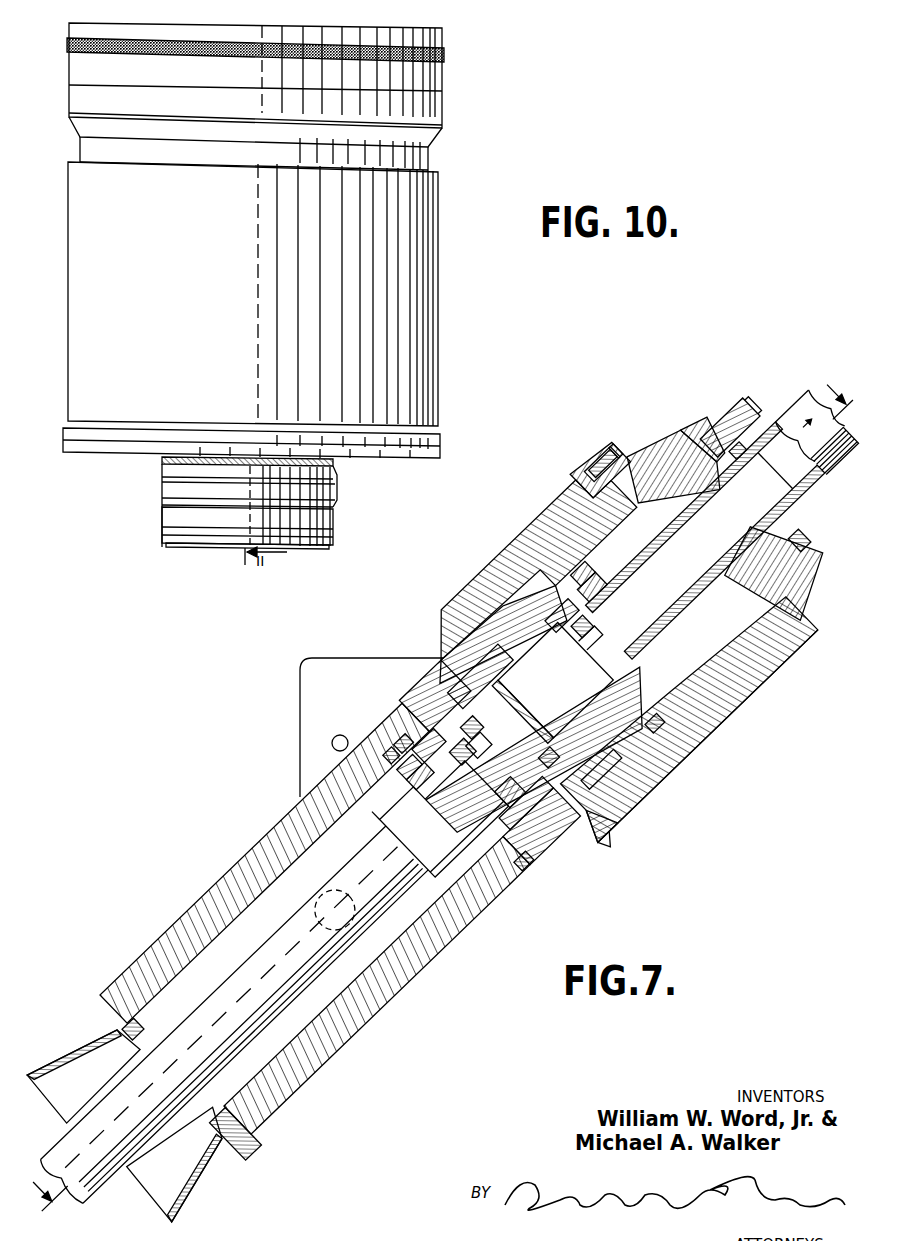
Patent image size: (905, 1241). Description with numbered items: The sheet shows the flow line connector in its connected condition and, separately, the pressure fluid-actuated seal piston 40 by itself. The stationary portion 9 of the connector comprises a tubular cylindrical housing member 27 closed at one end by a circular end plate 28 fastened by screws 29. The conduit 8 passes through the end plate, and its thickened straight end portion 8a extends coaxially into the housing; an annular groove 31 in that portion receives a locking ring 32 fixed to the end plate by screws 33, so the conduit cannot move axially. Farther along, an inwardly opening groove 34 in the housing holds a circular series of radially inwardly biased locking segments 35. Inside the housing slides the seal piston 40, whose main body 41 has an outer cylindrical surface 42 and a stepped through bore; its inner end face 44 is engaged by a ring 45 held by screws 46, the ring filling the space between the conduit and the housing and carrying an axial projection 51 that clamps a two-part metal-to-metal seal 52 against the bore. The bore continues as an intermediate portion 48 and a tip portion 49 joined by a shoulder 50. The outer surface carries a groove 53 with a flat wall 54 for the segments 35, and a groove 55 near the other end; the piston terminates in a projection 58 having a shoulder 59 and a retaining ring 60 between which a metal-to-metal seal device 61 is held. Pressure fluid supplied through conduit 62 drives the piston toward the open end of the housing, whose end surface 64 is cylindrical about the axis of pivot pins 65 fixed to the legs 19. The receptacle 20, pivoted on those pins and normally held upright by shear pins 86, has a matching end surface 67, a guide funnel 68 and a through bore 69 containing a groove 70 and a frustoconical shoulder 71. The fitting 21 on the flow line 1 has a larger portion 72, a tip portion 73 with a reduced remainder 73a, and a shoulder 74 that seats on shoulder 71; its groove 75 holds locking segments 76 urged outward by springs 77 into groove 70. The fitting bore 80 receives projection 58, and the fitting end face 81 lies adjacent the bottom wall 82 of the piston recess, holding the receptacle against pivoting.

In FIG. 7, the flow line 1 is at (233, 1016).
In FIG. 7, the conduit 8 is at (437, 795).
In FIG. 7, the end portion of conduit 8a is at (722, 524).
In FIG. 7, the stationary portion of the connector 9 is at (708, 736).
In FIG. 7, the legs 19 is at (300, 684).
In FIG. 7, the receptacle 20 is at (324, 931).
In FIG. 7, the fitting 21 is at (376, 816).
In FIG. 7, the housing member 27 is at (526, 571).
In FIG. 7, the end plate 28 is at (600, 468).
In FIG. 7, the screws 29 is at (605, 461).
In FIG. 7, the annular groove 31 is at (779, 569).
In FIG. 7, the locking ring 32 is at (671, 475).
In FIG. 7, the screws 33 is at (714, 440).
In FIG. 7, the annular groove 34 is at (655, 723).
In FIG. 7, the locking segments 35 is at (701, 711).
In FIG. 10, the seal piston 40 is at (255, 75).
In FIG. 7, the seal piston 40 is at (683, 711).
In FIG. 7, the main body 41 is at (549, 750).
In FIG. 10, the outer cylindrical surface 42 is at (443, 203).
In FIG. 10, the end face 44 is at (445, 72).
In FIG. 10, the ring 45 is at (255, 50).
In FIG. 7, the ring 45 is at (583, 573).
In FIG. 7, the screws 46 is at (592, 587).
In FIG. 7, the intermediate bore portion 48 is at (522, 711).
In FIG. 7, the tip bore portion 49 is at (479, 745).
In FIG. 7, the shoulder 50 is at (555, 680).
In FIG. 7, the axially directed projection 51 is at (582, 626).
In FIG. 7, the metal-to-metal seal 52 is at (591, 638).
In FIG. 10, the annular groove 53 is at (430, 152).
In FIG. 7, the annular groove 53 is at (562, 616).
In FIG. 10, the flat transverse wall 54 is at (432, 168).
In FIG. 7, the flat transverse wall 54 is at (504, 640).
In FIG. 10, the annular groove 55 is at (432, 436).
In FIG. 7, the annular groove 55 is at (601, 769).
In FIG. 10, the projection 58 is at (192, 550).
In FIG. 10, the shoulder 59 is at (185, 479).
In FIG. 10, the retaining ring 60 is at (165, 530).
In FIG. 10, the metal-to-metal seal device 61 is at (330, 503).
In FIG. 7, the metal-to-metal seal device 61 is at (462, 751).
In FIG. 7, the conduit 62 is at (731, 426).
In FIG. 7, the end surface 64 is at (608, 841).
In FIG. 7, the pivot pins 65 is at (335, 910).
In FIG. 7, the end surface 67 is at (597, 822).
In FIG. 7, the guide funnel 68 is at (137, 1112).
In FIG. 7, the through bore 69 is at (363, 972).
In FIG. 7, the annular groove 70 is at (404, 744).
In FIG. 7, the frustoconical shoulder 71 is at (429, 746).
In FIG. 7, the larger portion of fitting 72 is at (444, 813).
In FIG. 7, the tip portion of fitting 73 is at (435, 695).
In FIG. 7, the remainder of tip portion 73a is at (471, 727).
In FIG. 7, the frusto-conical shoulder 74 is at (529, 813).
In FIG. 7, the annular groove 75 is at (410, 766).
In FIG. 7, the locking segments 76 is at (458, 807).
In FIG. 7, the springs 77 is at (420, 775).
In FIG. 7, the through bore 80 is at (424, 827).
In FIG. 7, the end face 81 is at (481, 676).
In FIG. 7, the bottom wall 82 is at (548, 757).
In FIG. 7, the shear pins 86 is at (340, 735).